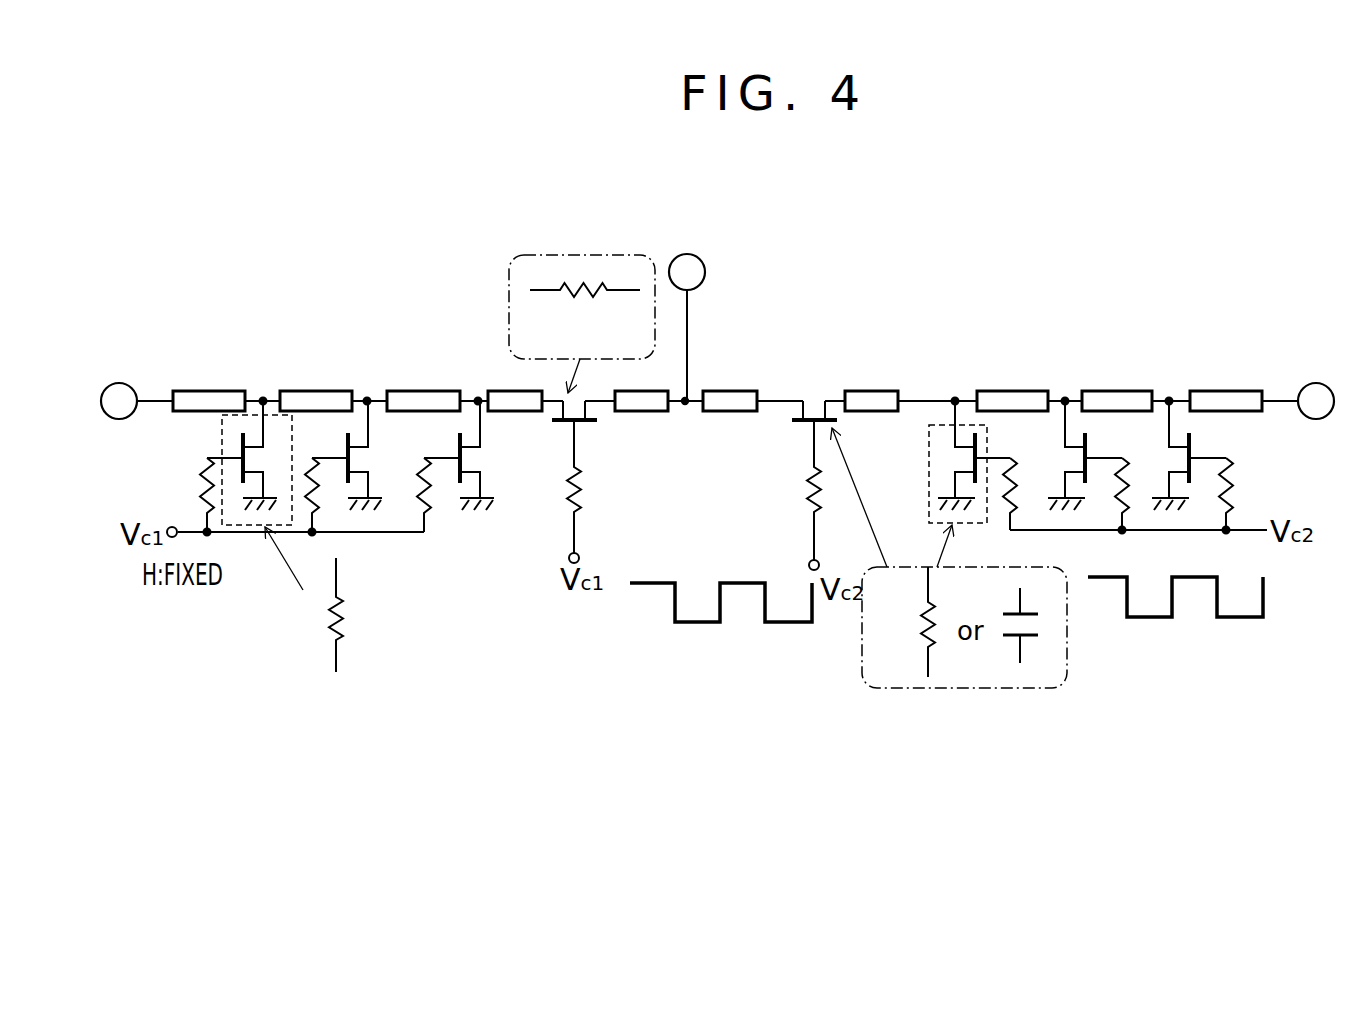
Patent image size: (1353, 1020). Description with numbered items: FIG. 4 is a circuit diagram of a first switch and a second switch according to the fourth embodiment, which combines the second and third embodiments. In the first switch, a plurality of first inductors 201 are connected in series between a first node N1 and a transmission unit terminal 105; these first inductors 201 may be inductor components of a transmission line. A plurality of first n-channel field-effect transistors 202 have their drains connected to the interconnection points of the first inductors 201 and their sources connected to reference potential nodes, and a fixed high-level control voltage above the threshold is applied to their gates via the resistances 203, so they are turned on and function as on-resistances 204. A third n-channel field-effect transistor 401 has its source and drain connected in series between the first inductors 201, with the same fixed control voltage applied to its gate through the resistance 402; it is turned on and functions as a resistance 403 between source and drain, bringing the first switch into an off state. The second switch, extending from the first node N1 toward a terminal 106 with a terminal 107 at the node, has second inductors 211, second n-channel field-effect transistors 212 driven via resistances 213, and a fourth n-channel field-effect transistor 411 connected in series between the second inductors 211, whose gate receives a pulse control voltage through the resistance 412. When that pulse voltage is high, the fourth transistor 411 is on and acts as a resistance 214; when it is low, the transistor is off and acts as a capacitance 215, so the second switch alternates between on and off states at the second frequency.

The transmission unit terminal 105 is at (120, 384).
The output terminal 106 is at (1316, 384).
The terminal 107 is at (705, 272).
The first node N1 is at (685, 411).
The first inductors 201 is at (640, 444).
The first n-channel field-effect transistors 202 is at (459, 460).
The resistances 203 is at (467, 556).
The on-resistances 204 is at (345, 617).
The second inductors 211 is at (1221, 391).
The second n-channel field-effect transistors 212 is at (1170, 458).
The resistances 213 is at (1270, 488).
The resistance 214 is at (922, 629).
The capacitance 215 is at (1012, 640).
The third n-channel field-effect transistor 401 is at (568, 424).
The resistance 402 is at (581, 493).
The resistance 403 is at (583, 288).
The fourth n-channel field-effect transistor 411 is at (803, 424).
The resistance 412 is at (806, 486).